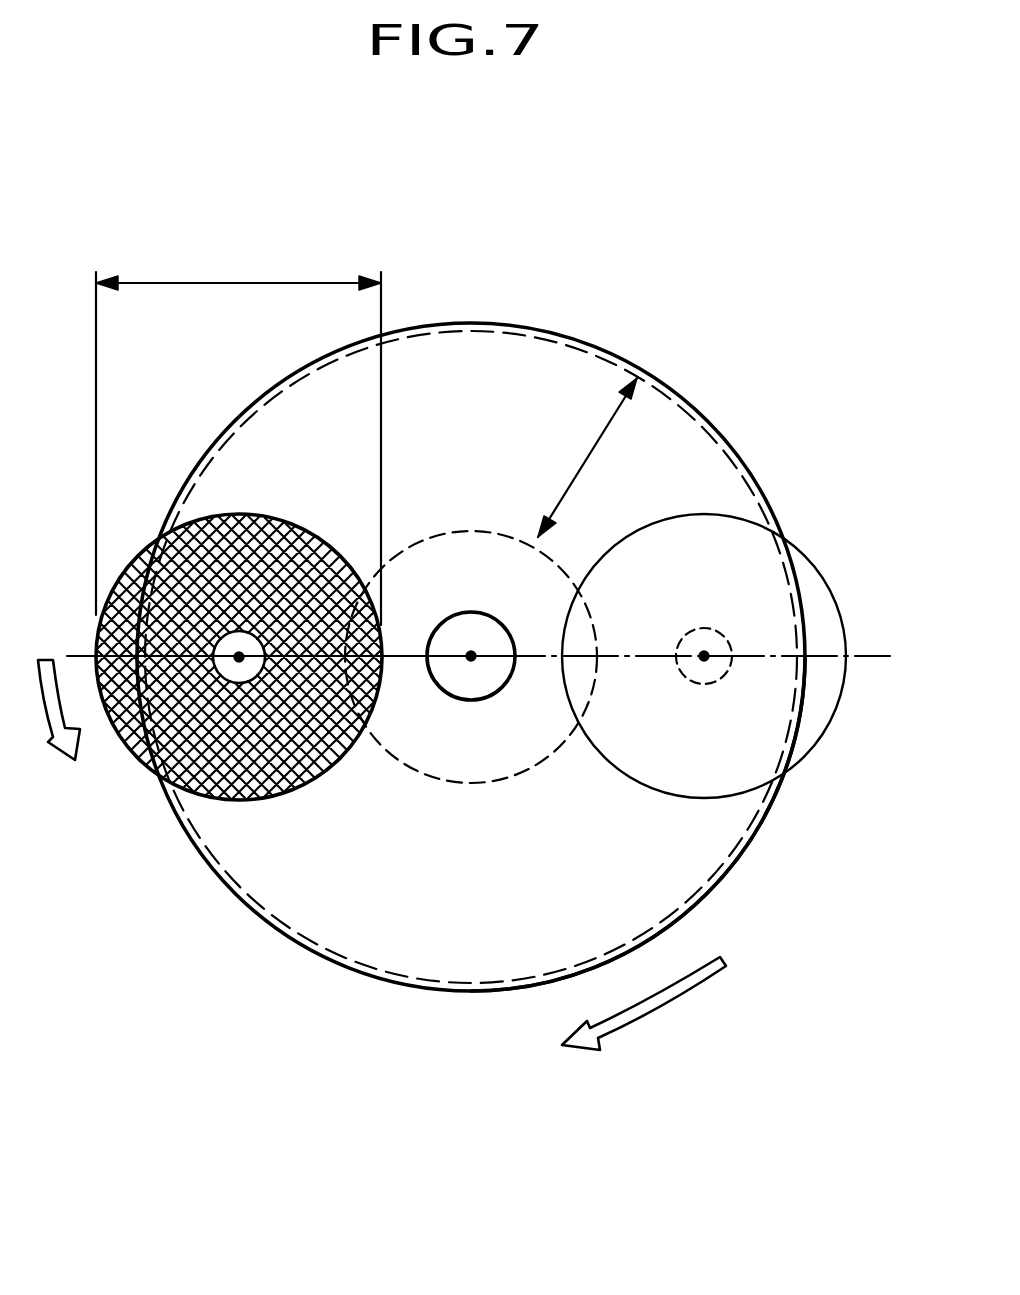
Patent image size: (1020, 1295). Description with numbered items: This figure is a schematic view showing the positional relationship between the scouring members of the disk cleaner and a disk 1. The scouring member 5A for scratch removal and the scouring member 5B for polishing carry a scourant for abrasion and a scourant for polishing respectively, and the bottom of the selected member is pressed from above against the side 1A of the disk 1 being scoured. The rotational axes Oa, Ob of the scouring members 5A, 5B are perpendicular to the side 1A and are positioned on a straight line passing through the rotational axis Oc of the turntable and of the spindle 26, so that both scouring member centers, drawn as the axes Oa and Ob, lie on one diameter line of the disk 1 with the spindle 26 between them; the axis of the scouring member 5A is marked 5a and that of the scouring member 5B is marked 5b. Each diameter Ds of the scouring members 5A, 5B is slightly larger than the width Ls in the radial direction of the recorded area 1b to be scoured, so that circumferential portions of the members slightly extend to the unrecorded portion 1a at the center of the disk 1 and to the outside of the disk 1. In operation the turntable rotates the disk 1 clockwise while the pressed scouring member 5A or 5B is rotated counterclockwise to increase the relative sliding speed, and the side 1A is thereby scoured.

The disk 1 is at (493, 366).
The side of the disk 1A is at (647, 887).
The unrecorded portion 1a is at (412, 727).
The recorded area 1b is at (484, 925).
The spindle 26 is at (497, 684).
The scouring member for scratch removal 5A is at (205, 792).
The scouring member for polishing 5B is at (828, 698).
The rotation shaft of first polishing pad 5a is at (243, 645).
The rotation shaft of second polishing pad 5b is at (707, 650).
The rotational axis of the scouring member for scratch removal Oa is at (297, 775).
The rotational axis of the scouring member for polishing Ob is at (704, 660).
The rotational axis of the turntable and spindle Oc is at (472, 662).
The diameter of the scouring member Ds is at (226, 283).
The width in the radial direction of the recorded area Ls is at (600, 438).